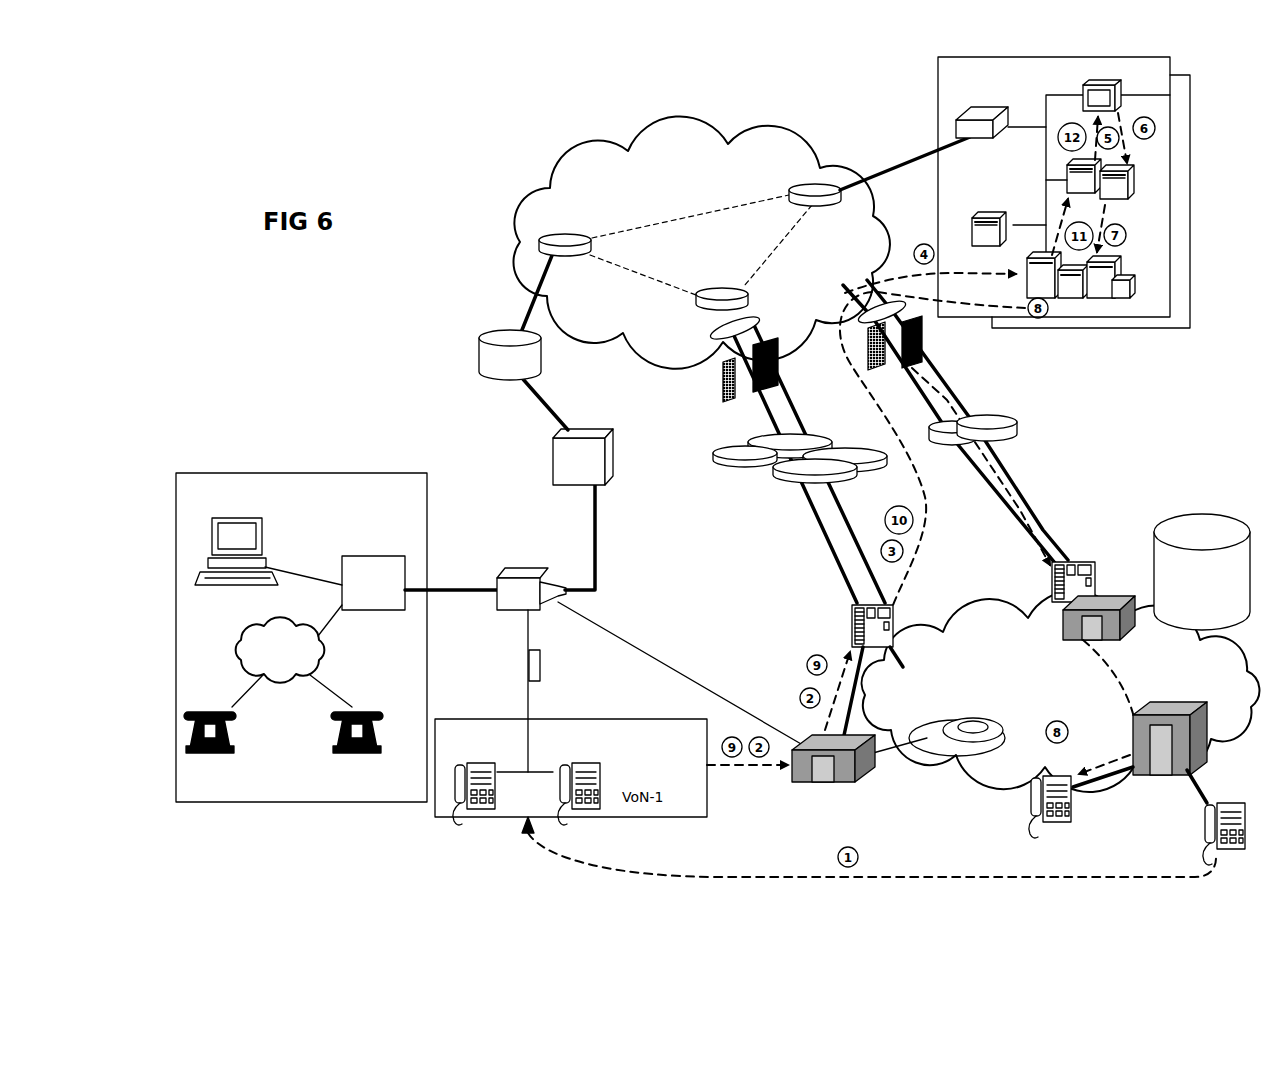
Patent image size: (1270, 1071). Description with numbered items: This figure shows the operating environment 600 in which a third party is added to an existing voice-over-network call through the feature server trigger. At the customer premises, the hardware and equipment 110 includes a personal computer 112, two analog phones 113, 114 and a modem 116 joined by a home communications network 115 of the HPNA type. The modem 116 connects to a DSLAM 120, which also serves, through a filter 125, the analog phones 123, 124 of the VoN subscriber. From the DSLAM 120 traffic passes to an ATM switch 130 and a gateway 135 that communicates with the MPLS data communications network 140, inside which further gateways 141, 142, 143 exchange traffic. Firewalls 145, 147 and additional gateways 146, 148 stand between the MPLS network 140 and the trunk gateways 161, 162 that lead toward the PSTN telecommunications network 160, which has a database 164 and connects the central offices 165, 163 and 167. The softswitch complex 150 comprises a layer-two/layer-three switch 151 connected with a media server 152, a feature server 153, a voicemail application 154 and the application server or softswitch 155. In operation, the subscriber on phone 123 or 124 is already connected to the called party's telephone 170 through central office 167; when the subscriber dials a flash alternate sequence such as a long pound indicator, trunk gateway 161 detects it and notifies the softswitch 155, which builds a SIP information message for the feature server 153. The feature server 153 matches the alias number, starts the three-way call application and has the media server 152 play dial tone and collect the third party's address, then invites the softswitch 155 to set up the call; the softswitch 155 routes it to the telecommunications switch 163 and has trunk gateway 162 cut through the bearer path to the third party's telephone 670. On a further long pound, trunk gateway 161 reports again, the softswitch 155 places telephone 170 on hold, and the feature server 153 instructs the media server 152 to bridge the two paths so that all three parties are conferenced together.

The voice over network system 600 is at (448, 157).
The customer premises hardware and equipment 110 is at (260, 473).
The personal computer 112 is at (230, 518).
The analog phone 113 is at (210, 705).
The analog phone 114 is at (364, 707).
The HPNA home network 115 is at (263, 624).
The modem 116 is at (373, 556).
The DSLAM 120 is at (550, 580).
The analog phone 123 is at (480, 758).
The analog phone 124 is at (600, 767).
The filter 125 is at (543, 672).
The ATM switch 130 is at (615, 466).
The gateway 135 is at (543, 370).
The data communications network 140 is at (667, 140).
The gateway 141 is at (593, 250).
The gateway 142 is at (793, 203).
The gateway 143 is at (712, 288).
The firewall 145 is at (723, 388).
The gateway 146 is at (862, 467).
The firewall 147 is at (923, 352).
The gateway 148 is at (1018, 433).
The softswitch complex 150 is at (1190, 170).
The L2/L3 switch 151 is at (1000, 134).
The media server 152 is at (1118, 102).
The feature server 153 is at (1132, 170).
The voicemail application 154 is at (997, 245).
The application server 155 is at (1058, 297).
The telecommunications network 160 is at (950, 624).
The trunk gateway 161 is at (852, 610).
The trunk gateway 162 is at (1082, 562).
The central office 163 is at (1095, 600).
The database 164 is at (1188, 514).
The central office 165 is at (793, 777).
The central office 167 is at (1158, 708).
The calling party telephone 170 is at (1225, 840).
The telephone 670 is at (1047, 815).